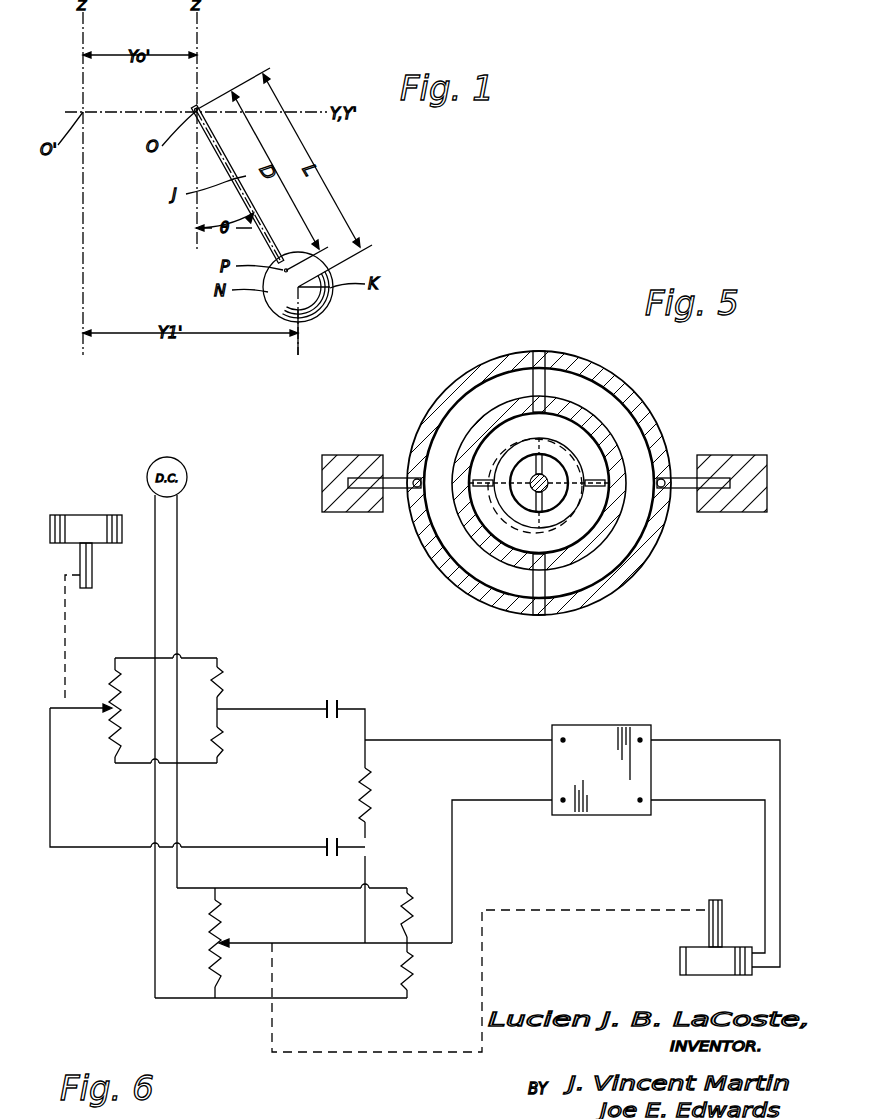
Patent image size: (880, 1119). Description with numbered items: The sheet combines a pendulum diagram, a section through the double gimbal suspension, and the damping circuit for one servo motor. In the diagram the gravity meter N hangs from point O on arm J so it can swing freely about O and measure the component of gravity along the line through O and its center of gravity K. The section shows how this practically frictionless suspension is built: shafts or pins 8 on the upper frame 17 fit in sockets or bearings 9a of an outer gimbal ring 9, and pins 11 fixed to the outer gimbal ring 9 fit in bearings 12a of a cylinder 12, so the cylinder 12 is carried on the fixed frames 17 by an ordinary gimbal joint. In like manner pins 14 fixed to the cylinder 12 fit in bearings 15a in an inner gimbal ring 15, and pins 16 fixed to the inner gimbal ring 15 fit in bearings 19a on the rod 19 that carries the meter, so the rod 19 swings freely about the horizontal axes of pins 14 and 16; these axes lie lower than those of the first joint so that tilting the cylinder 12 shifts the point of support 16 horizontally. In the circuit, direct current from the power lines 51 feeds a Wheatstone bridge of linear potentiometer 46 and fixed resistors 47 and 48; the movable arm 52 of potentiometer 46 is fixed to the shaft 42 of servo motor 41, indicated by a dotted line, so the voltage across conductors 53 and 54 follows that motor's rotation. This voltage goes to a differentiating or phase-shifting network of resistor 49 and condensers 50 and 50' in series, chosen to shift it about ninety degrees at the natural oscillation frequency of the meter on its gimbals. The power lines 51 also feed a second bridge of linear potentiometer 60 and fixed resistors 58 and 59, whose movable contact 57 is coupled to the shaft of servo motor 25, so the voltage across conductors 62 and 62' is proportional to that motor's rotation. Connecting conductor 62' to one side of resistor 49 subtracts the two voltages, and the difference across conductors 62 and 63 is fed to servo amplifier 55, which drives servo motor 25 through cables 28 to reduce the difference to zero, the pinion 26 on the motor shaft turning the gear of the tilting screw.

In FIG. 5, the shafts or pins 8 is at (402, 492).
In FIG. 5, the outer gimbal ring 9 is at (458, 575).
In FIG. 5, the sockets or bearings 9a is at (408, 474).
In FIG. 5, the shafts or pins 11 is at (533, 358).
In FIG. 5, the cylinder 12 is at (632, 560).
In FIG. 5, the sockets or bearings 12a is at (542, 400).
In FIG. 5, the shafts or pins 14 is at (470, 525).
In FIG. 5, the inner gimbal ring 15 is at (563, 418).
In FIG. 5, the sockets or bearings 15a is at (660, 414).
In FIG. 5, the shafts or pins 16 is at (548, 474).
In FIG. 5, the upper frame 17 is at (350, 502).
In FIG. 5, the rod 19 is at (547, 498).
In FIG. 5, the sockets or bearings 19a is at (539, 451).
In FIG. 6, the servo motor 41 is at (72, 517).
In FIG. 6, the shaft 42 is at (93, 560).
In FIG. 6, the linear potentiometer 46 is at (121, 700).
In FIG. 6, the fixed resistor 47 is at (222, 680).
In FIG. 6, the fixed resistor 48 is at (222, 742).
In FIG. 6, the resistor 49 is at (371, 782).
In FIG. 6, the condenser 50 is at (346, 725).
In FIG. 6, the condenser 50' is at (328, 874).
In FIG. 6, the power lines 51 is at (180, 507).
In FIG. 6, the movable arm 52 is at (78, 712).
In FIG. 6, the conductor 53 is at (296, 710).
In FIG. 6, the conductor 54 is at (214, 847).
In FIG. 6, the servo amplifier 55 is at (590, 725).
In FIG. 6, the movable contact 57 is at (240, 940).
In FIG. 6, the fixed resistor 58 is at (404, 915).
In FIG. 6, the fixed resistor 59 is at (402, 968).
In FIG. 6, the linear potentiometer 60 is at (210, 950).
In FIG. 6, the conductor 62 is at (502, 871).
In FIG. 6, the conductor 62' is at (297, 871).
In FIG. 6, the conductor 63 is at (448, 740).
In FIG. 6, the electric servo motor 25 is at (680, 957).
In FIG. 6, the pinion 26 is at (709, 928).
In FIG. 6, the cables 28 is at (765, 853).